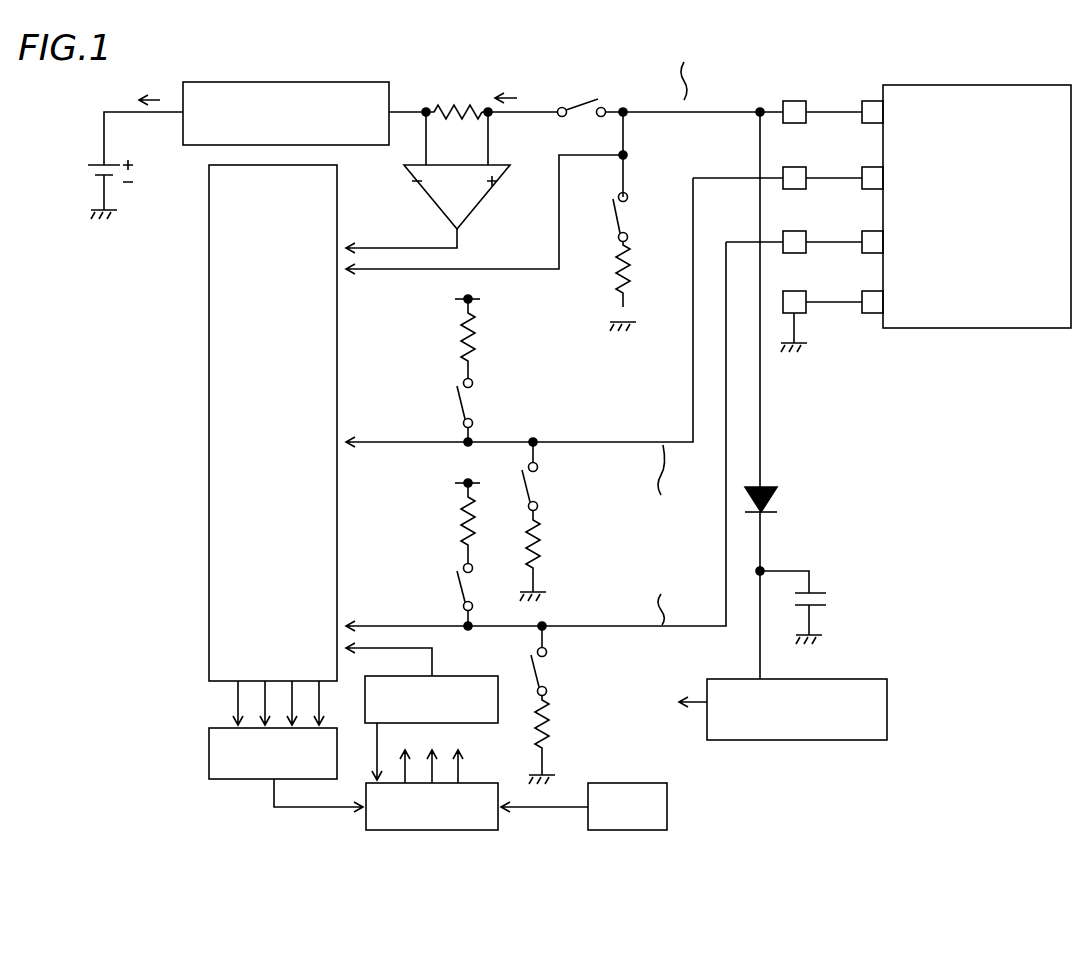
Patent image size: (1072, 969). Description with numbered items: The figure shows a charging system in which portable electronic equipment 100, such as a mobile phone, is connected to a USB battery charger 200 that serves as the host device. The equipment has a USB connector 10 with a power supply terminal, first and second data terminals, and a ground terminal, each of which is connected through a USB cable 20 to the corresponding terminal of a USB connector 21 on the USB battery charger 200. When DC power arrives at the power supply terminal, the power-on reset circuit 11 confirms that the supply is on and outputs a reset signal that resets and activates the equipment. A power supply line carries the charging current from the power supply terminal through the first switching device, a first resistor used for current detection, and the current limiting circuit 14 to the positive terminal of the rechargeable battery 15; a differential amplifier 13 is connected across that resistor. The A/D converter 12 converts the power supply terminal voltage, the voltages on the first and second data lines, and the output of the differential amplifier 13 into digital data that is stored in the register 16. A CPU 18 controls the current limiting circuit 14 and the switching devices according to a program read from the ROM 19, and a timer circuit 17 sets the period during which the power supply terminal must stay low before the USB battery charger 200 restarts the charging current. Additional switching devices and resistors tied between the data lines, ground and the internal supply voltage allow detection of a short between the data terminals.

The portable electronic equipment 100 is at (547, 91).
The USB battery charger 200 is at (953, 88).
The current limiting circuit 14 is at (357, 90).
The differential amplifier 13 is at (476, 197).
The rechargeable battery 15 is at (86, 172).
The A/D converter 12 is at (209, 528).
The register 16 is at (209, 758).
The timer circuit 17 is at (476, 682).
The CPU 18 is at (476, 786).
The ROM 19 is at (668, 806).
The power-on reset circuit 11 is at (877, 701).
The USB connector 10 is at (816, 330).
The USB cable 20 is at (845, 305).
The USB connector 21 is at (872, 320).